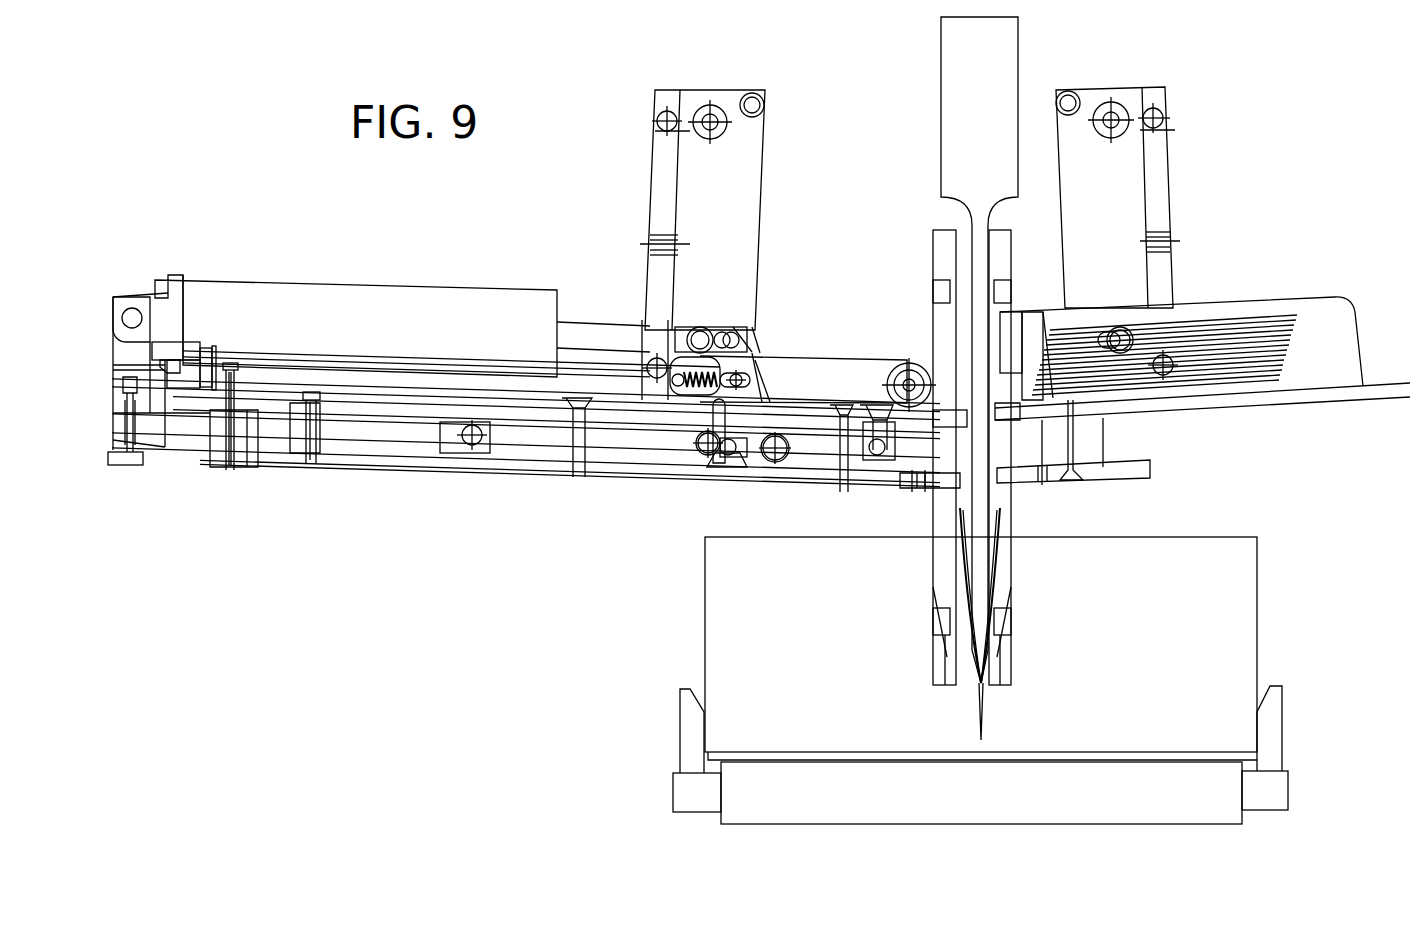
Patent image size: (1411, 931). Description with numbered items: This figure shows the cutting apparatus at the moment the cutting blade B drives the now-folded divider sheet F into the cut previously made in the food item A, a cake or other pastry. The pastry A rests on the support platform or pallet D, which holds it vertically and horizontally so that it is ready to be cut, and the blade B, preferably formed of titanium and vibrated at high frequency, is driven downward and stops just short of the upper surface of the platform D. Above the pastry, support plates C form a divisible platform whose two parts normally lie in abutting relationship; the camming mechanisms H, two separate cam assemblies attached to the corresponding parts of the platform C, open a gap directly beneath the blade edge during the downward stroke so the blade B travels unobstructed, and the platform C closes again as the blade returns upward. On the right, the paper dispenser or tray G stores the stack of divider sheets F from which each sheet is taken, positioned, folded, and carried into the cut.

The food item A is at (1258, 630).
The cutting blade B is at (925, 113).
The support plates C is at (1154, 476).
The support platform D is at (984, 757).
The divider sheets F is at (1190, 322).
The paper dispenser or tray G is at (1287, 298).
The camming mechanisms H is at (822, 340).